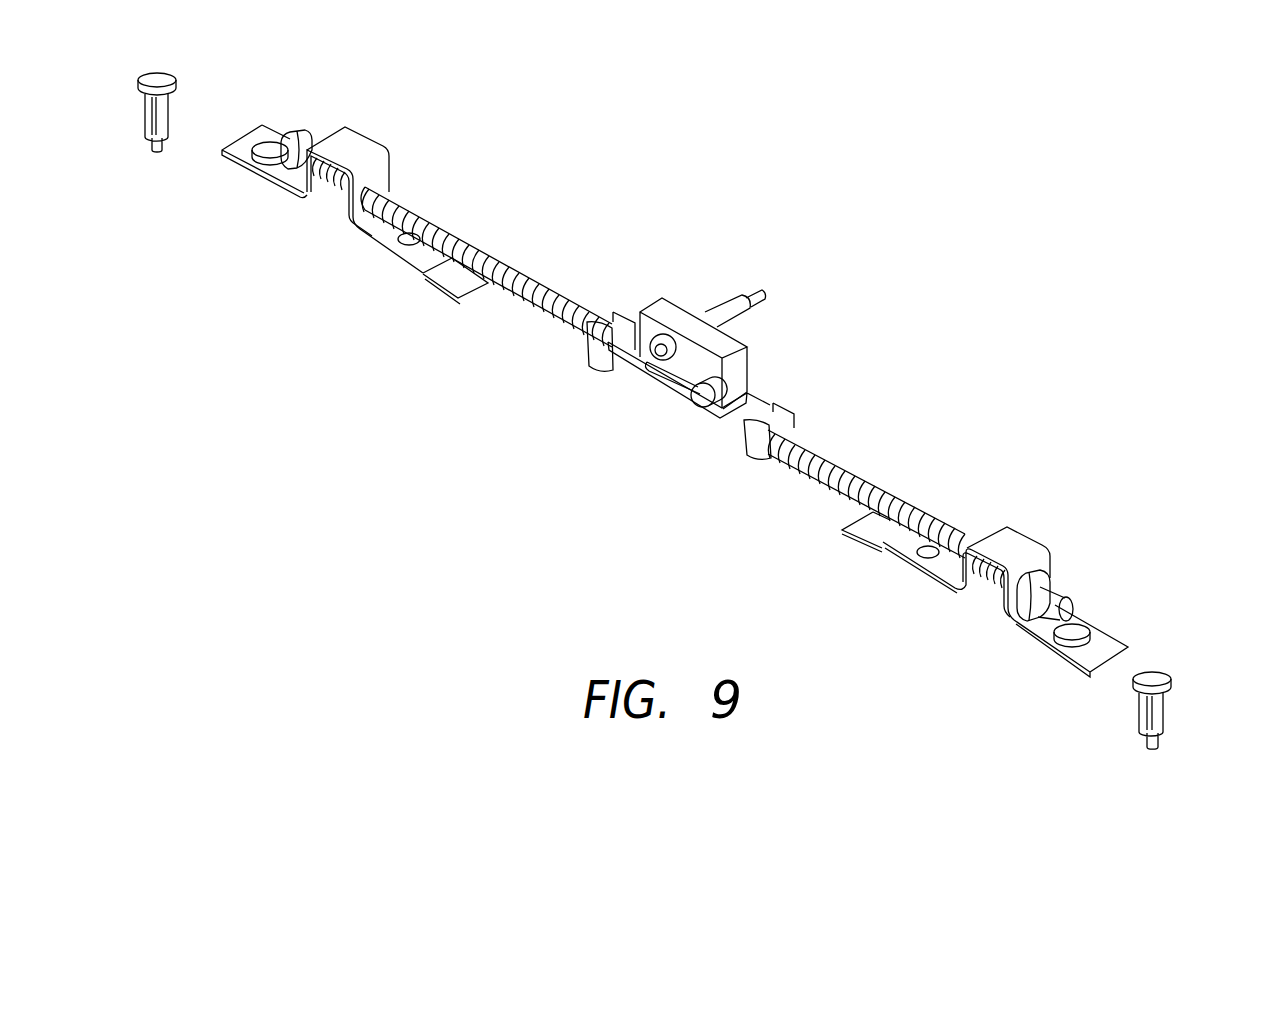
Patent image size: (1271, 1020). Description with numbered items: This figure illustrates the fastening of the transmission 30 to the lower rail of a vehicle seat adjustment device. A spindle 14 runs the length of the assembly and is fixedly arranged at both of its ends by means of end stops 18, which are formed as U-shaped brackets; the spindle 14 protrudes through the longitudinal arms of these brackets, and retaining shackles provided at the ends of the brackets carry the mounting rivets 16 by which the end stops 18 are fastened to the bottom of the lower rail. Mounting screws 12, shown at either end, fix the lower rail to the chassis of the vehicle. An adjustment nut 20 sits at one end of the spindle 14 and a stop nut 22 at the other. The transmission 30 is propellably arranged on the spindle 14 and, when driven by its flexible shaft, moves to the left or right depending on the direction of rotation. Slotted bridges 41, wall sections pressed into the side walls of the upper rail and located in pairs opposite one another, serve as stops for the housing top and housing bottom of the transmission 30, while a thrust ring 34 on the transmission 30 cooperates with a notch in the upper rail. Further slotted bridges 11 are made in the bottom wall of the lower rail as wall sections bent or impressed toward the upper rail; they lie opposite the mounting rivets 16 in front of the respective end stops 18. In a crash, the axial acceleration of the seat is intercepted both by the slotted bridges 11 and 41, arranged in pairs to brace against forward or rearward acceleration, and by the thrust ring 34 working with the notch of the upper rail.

The slotted bridges 11 is at (424, 278).
The mounting screws 12 is at (143, 77).
The spindle 14 is at (417, 212).
The mounting rivets 16 is at (273, 180).
The end stops 18 is at (355, 127).
The adjustment nut 20 is at (307, 130).
The stop nut 22 is at (1050, 587).
The transmission 30 is at (663, 298).
The thrust ring 34 is at (713, 403).
The slotted bridges 41 is at (590, 358).